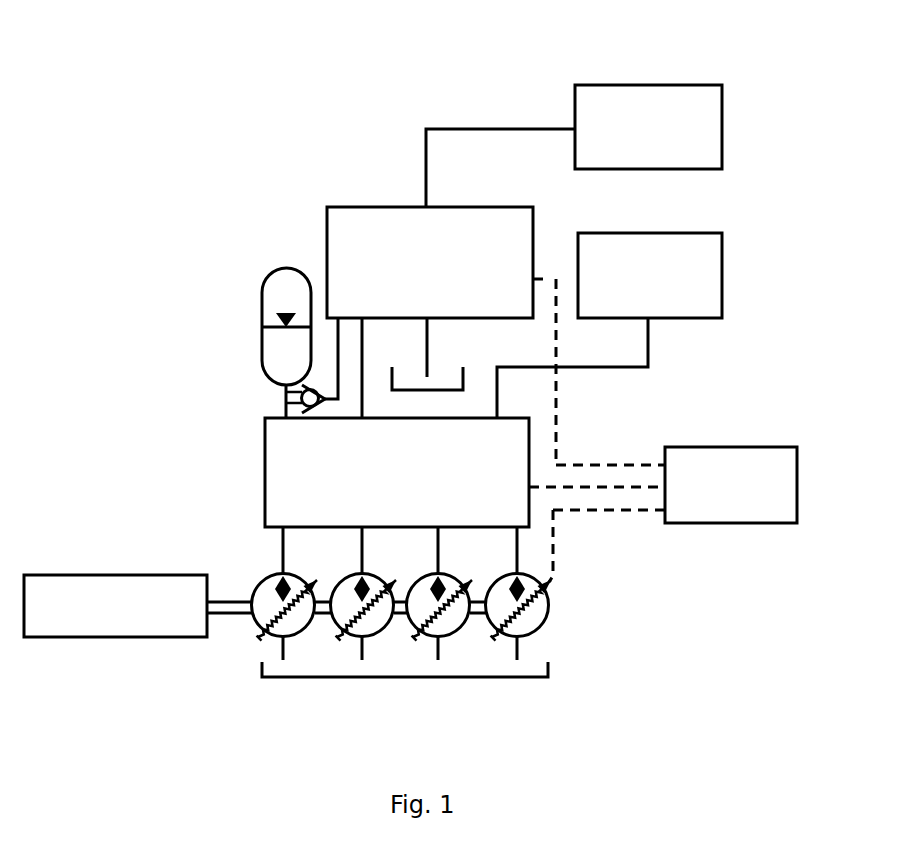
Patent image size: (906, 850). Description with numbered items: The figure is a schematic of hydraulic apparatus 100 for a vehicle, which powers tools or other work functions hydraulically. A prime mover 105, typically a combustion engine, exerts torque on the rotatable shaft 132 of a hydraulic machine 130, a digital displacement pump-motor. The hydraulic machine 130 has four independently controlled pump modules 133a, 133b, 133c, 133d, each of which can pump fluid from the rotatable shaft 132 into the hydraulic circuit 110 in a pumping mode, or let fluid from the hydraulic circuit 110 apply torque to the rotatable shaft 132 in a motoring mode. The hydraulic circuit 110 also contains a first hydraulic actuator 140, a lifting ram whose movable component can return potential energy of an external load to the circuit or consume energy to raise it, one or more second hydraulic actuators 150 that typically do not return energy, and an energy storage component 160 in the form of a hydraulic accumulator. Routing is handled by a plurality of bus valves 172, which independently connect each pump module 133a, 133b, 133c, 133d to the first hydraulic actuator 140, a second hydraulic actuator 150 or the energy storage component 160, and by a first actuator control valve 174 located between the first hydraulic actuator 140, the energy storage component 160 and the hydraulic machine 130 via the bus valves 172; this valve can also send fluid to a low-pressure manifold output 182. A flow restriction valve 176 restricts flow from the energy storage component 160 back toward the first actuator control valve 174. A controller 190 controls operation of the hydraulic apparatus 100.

The hydraulic apparatus 100 is at (165, 80).
The prime mover 105 is at (96, 621).
The hydraulic circuit 110 is at (210, 356).
The hydraulic machine 130 is at (594, 662).
The rotatable shaft 132 is at (228, 613).
The pump module 133a is at (292, 640).
The pump module 133b is at (372, 638).
The pump module 133c is at (453, 638).
The pump module 133d is at (549, 614).
The first hydraulic actuator 140 is at (628, 141).
The second hydraulic actuator 150 is at (630, 287).
The energy storage component 160 is at (258, 288).
The bus valves 172 is at (377, 487).
The first actuator control valve 174 is at (404, 284).
The flow restriction valve 176 is at (287, 407).
The low-pressure manifold output 182 is at (423, 342).
The controller 190 is at (711, 497).